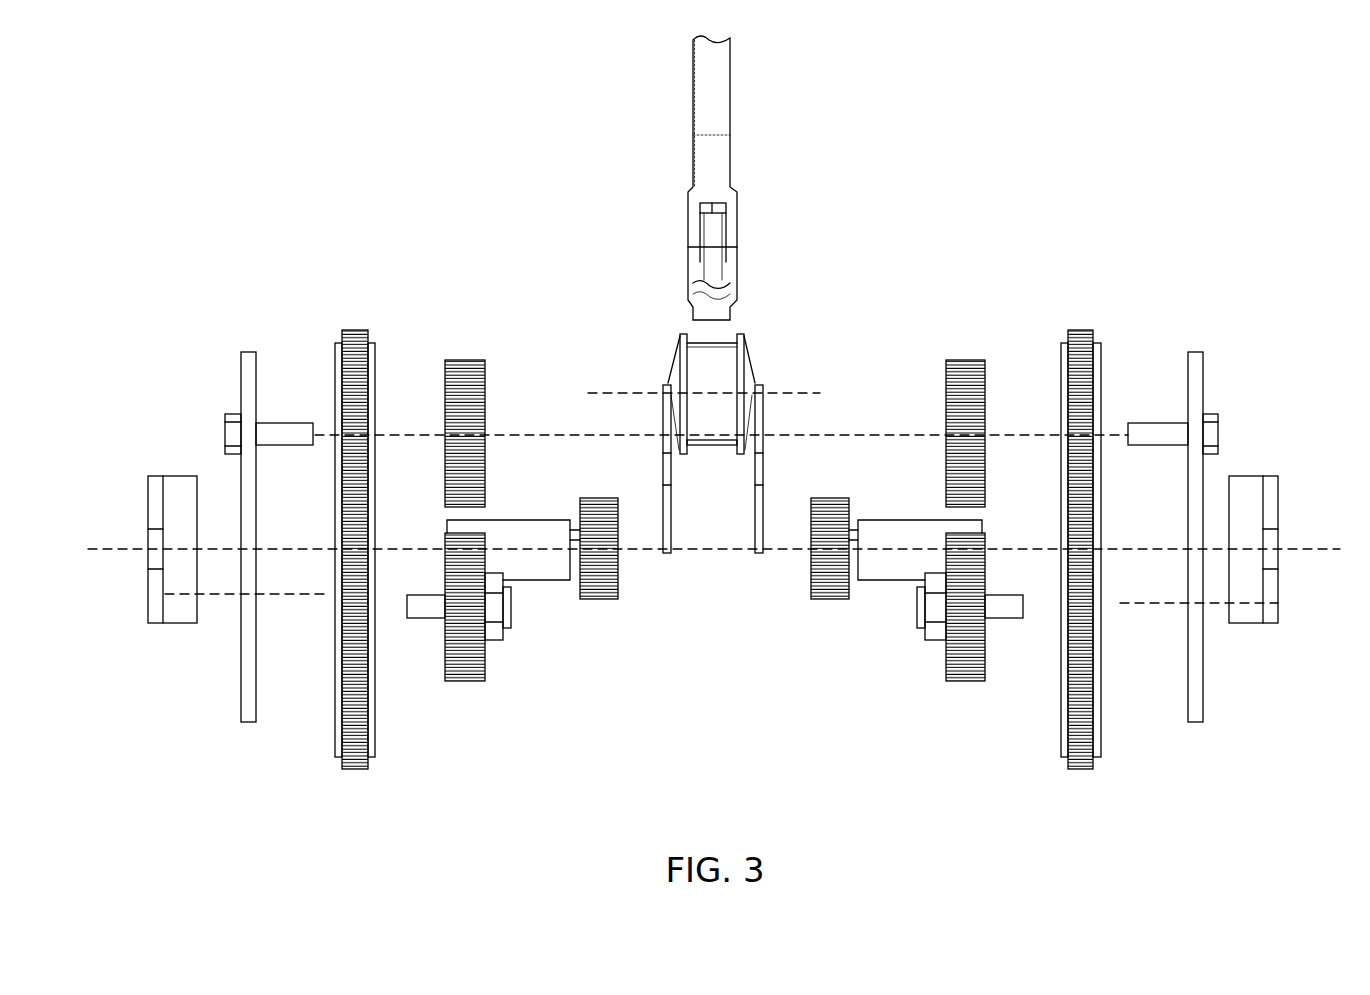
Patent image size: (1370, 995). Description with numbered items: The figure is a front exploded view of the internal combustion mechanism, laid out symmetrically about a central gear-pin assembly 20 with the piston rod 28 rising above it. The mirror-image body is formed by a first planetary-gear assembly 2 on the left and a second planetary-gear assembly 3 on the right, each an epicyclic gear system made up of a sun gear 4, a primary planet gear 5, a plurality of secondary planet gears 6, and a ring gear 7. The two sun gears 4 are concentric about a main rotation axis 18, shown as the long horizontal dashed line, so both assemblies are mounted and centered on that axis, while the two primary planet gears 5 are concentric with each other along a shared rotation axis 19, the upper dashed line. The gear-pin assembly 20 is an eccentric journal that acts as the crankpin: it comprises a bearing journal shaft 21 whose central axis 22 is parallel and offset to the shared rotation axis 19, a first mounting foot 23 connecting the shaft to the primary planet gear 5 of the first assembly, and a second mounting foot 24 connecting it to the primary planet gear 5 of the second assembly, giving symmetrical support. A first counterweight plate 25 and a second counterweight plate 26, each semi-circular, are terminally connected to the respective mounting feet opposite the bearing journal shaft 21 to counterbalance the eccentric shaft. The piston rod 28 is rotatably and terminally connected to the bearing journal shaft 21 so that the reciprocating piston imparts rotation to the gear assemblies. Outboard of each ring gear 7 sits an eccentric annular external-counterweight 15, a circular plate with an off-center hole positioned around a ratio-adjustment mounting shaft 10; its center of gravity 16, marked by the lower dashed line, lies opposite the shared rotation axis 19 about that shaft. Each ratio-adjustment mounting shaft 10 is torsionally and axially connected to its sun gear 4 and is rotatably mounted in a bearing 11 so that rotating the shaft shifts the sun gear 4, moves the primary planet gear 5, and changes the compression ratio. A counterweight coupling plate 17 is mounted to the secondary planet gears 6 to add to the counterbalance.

The first planetary-gear assembly 2 is at (197, 303).
The second planetary-gear assembly 3 is at (1250, 303).
The sun gear 4 is at (604, 600).
The primary planet gear 5 is at (465, 368).
The secondary planet gears 6 is at (469, 681).
The ring gear 7 is at (343, 350).
The ratio-adjustment mounting shaft 10 is at (545, 572).
The bearing 11 is at (172, 622).
The eccentric annular external-counterweight 15 is at (248, 718).
The center of gravity 16 is at (318, 598).
The counterweight coupling plate 17 is at (500, 630).
The main rotation axis 18 is at (710, 554).
The shared rotation axis 19 is at (708, 448).
The gear-pin assembly 20 is at (720, 632).
The bearing journal shaft 21 is at (700, 381).
The central axis 22 is at (828, 393).
The first mounting foot 23 is at (672, 373).
The second mounting foot 24 is at (748, 372).
The first counterweight plate 25 is at (667, 520).
The second counterweight plate 26 is at (759, 520).
The piston rod 28 is at (703, 98).